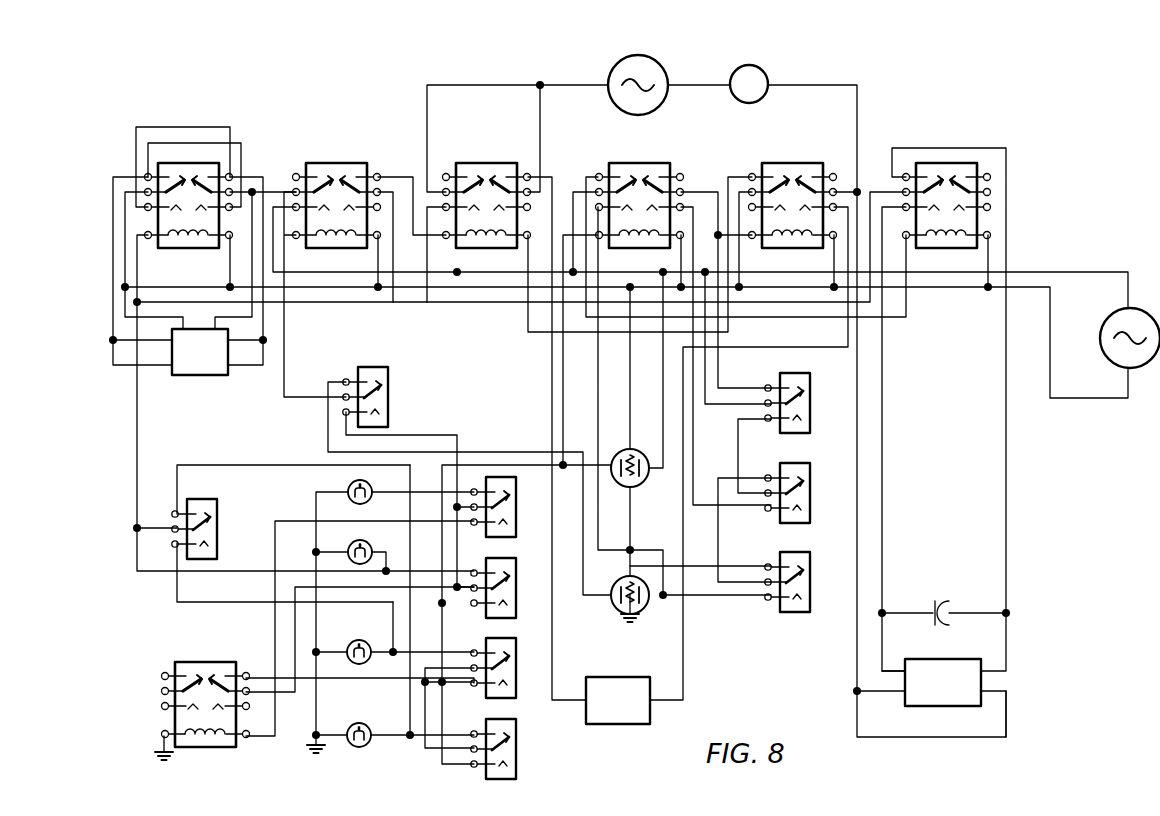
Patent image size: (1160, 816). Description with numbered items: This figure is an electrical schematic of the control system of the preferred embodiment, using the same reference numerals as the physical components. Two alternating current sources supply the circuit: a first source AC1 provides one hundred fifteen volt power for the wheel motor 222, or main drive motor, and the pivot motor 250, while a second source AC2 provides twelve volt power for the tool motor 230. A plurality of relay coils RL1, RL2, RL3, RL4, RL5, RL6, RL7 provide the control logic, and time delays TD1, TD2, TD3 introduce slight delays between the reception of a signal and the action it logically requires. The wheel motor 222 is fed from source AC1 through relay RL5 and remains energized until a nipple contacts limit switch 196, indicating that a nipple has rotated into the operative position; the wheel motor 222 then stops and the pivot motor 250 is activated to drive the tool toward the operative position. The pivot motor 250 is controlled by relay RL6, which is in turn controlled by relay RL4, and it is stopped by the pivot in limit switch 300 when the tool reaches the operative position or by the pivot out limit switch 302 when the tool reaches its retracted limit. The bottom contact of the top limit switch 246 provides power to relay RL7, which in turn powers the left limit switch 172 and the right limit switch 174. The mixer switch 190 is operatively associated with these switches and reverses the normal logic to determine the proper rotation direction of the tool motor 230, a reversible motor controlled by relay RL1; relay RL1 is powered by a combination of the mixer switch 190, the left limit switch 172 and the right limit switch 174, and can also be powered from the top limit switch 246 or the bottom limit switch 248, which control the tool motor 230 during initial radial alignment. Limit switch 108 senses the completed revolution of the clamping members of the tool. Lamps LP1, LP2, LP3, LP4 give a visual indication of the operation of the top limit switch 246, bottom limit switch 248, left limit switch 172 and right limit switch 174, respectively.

The relay RL1 is at (188, 248).
The relay RL2 is at (335, 163).
The relay RL3 is at (492, 163).
The relay RL4 is at (644, 163).
The relay RL5 is at (806, 163).
The relay RL6 is at (992, 215).
The relay RL7 is at (216, 662).
The first alternating current power source AC1 is at (610, 77).
The second alternating current power source AC2 is at (1108, 361).
The time delay TD1 is at (612, 612).
The time delay TD2 is at (616, 442).
The time delay TD3 is at (766, 77).
The lamp LP1 is at (346, 488).
The lamp LP2 is at (346, 546).
The lamp LP3 is at (360, 640).
The lamp LP4 is at (358, 722).
The limit switch 108 is at (373, 367).
The mixer switch 190 is at (218, 527).
The limit switch 196 is at (800, 435).
The pivot out switch 302 is at (800, 523).
The pivot in switch 300 is at (800, 612).
The top limit switch 246 is at (500, 537).
The bottom limit switch 248 is at (496, 617).
The left limit switch 172 is at (496, 698).
The right limit switch 174 is at (516, 748).
The tool motor 230 is at (205, 376).
The wheel motor 222 is at (612, 677).
The pivot motor 250 is at (934, 659).